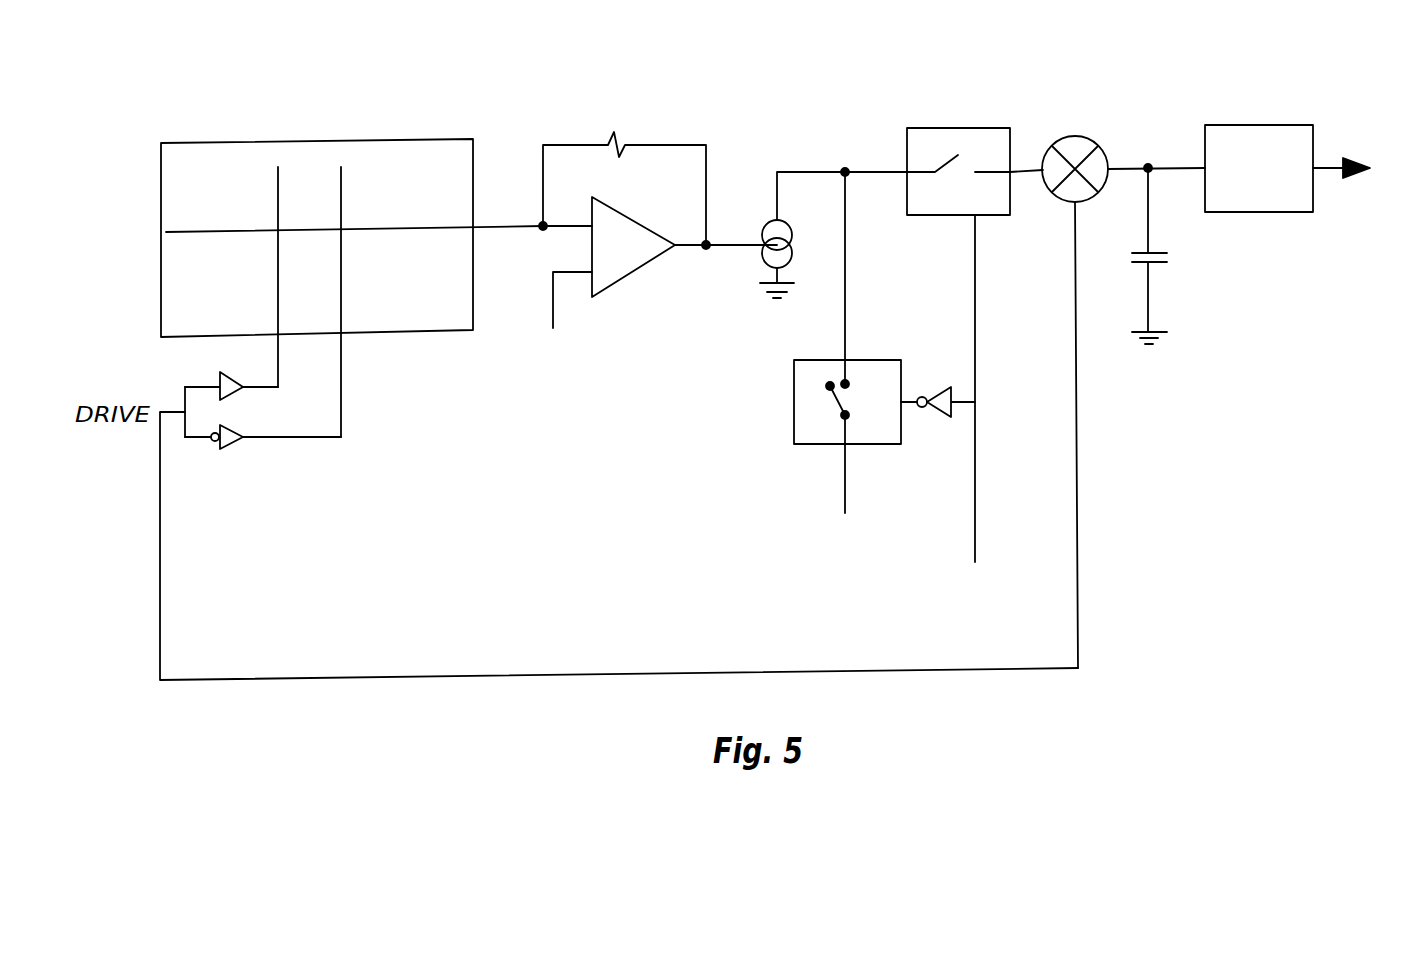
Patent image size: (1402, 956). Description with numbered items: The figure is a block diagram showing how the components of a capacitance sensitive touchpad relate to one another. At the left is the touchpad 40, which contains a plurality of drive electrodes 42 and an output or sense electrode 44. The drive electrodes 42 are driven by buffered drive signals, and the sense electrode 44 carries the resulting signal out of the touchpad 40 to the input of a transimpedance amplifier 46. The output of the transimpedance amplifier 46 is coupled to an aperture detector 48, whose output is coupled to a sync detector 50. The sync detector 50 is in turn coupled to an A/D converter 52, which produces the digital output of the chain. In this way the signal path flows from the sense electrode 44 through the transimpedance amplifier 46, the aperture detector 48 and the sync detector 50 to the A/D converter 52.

The touchpad 40 is at (312, 139).
The drive electrodes 42 is at (263, 387).
The sense electrode 44 is at (412, 228).
The transimpedance amplifier 46 is at (632, 272).
The aperture detector 48 is at (933, 377).
The sync detector 50 is at (1078, 494).
The A/D converter 52 is at (1287, 168).